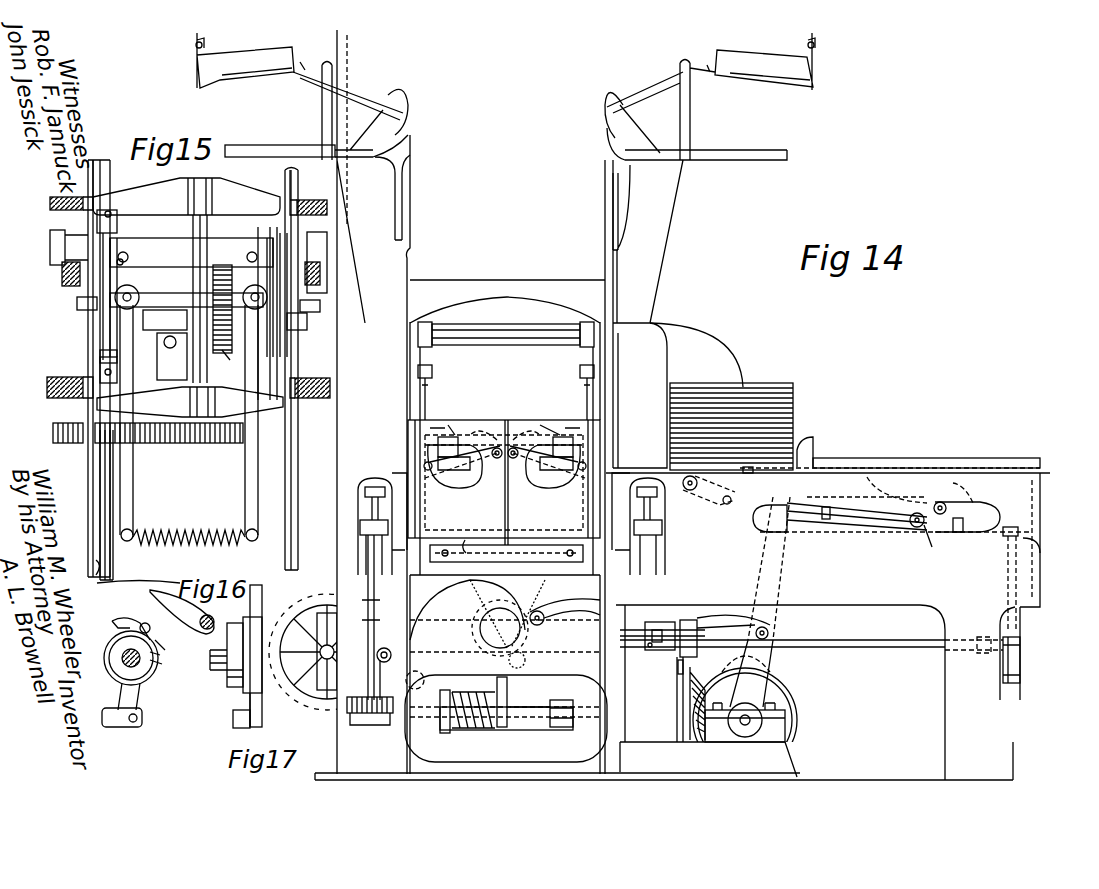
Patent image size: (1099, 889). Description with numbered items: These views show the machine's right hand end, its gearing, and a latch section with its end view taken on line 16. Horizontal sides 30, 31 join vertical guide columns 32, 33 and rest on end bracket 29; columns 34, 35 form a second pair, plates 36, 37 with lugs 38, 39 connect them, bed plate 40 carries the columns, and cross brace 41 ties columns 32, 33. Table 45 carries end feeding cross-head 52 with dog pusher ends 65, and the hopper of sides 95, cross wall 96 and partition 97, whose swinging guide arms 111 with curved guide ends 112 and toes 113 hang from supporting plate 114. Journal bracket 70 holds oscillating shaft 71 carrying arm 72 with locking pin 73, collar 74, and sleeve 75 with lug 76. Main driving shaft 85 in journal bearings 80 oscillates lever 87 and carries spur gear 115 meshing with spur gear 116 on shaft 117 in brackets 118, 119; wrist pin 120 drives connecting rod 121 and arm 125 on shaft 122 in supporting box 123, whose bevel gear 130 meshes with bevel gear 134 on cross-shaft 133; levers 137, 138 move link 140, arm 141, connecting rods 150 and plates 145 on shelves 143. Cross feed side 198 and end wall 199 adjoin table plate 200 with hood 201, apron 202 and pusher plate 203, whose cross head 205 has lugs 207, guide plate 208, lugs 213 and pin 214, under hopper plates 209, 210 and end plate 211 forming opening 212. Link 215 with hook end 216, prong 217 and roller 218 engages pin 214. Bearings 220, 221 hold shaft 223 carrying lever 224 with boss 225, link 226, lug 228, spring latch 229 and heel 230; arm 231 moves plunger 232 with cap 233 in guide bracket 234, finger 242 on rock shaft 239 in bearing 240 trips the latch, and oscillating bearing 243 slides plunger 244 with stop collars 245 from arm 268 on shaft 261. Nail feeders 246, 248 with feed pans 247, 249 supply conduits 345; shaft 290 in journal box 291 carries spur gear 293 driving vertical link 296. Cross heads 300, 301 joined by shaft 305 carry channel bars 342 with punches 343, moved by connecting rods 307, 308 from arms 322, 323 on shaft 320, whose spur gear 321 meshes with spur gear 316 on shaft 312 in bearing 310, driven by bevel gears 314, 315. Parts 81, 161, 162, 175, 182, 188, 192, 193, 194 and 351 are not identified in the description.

In FIG. 14, the vertical link 296 is at (345, 55).
In FIG. 14, the nail feeder 246 is at (370, 95).
In FIG. 14, the oscillating feed pan 247 is at (248, 78).
In FIG. 14, the nail feeder 248 is at (660, 98).
In FIG. 14, the oscillating feed pan 249 is at (755, 82).
In FIG. 14, the nail feeding conduits 345 is at (402, 200).
In FIG. 15, the vertical guide column 32 is at (67, 381).
In FIG. 14, the vertical guide column 32 is at (372, 402).
In FIG. 15, the vertical guide column 33 is at (310, 382).
In FIG. 14, the vertical guide column 33 is at (647, 439).
In FIG. 14, the cross brace 41 is at (507, 293).
In FIG. 14, the side plate 209 is at (712, 315).
In FIG. 14, the cross head 300 is at (436, 371).
In FIG. 14, the shaft 305 is at (495, 345).
In FIG. 14, the cross head 301 is at (585, 347).
In FIG. 14, the side plate 210 is at (640, 314).
In FIG. 14, the end plate 211 is at (618, 392).
In FIG. 14, the opening 212 is at (608, 466).
In FIG. 14, the channel bar 342 is at (432, 373).
In FIG. 14, the punches 343 is at (506, 399).
In FIG. 14, the plate 188 is at (503, 417).
In FIG. 14, the lever 182 is at (459, 419).
In FIG. 14, the toes 113 is at (494, 448).
In FIG. 14, the supporting plate 114 is at (556, 416).
In FIG. 14, the stack 351 is at (773, 410).
In FIG. 14, the apron 202 is at (808, 437).
In FIG. 14, the hood 201 is at (855, 458).
In FIG. 14, the table plate 200 is at (845, 472).
In FIG. 14, the pin 161 is at (434, 460).
In FIG. 14, the pin 162 is at (567, 459).
In FIG. 14, the swinging guide arms 111 is at (504, 469).
In FIG. 14, the curved guide ends 112 is at (445, 470).
In FIG. 14, the plates 145 is at (380, 478).
In FIG. 14, the connecting rods 150 is at (366, 507).
In FIG. 14, the cross wall 96 is at (477, 507).
In FIG. 14, the longitudinal partition 97 is at (508, 512).
In FIG. 14, the sides 95 is at (425, 525).
In FIG. 14, the pusher ends 65 is at (475, 538).
In FIG. 14, the link 140 is at (368, 570).
In FIG. 14, the arm 141 is at (378, 676).
In FIG. 15, the horizontal side 30 is at (85, 466).
In FIG. 14, the horizontal side 30 is at (412, 587).
In FIG. 15, the horizontal side 31 is at (298, 463).
In FIG. 14, the horizontal side 31 is at (614, 587).
In FIG. 14, the table 45 is at (462, 594).
In FIG. 14, the end feeding cross-head 52 is at (525, 594).
In FIG. 15, the spur gear 116 is at (196, 443).
In FIG. 14, the spur gear 116 is at (545, 612).
In FIG. 15, the spur gear 115 is at (53, 437).
In FIG. 14, the spur gear 115 is at (455, 600).
In FIG. 15, the main driving shaft 85 is at (104, 523).
In FIG. 14, the main driving shaft 85 is at (418, 672).
In FIG. 14, the gear 81 is at (499, 628).
In FIG. 14, the lever 87 is at (517, 660).
In FIG. 14, the wrist pin 120 is at (549, 628).
In FIG. 14, the arm 72 is at (540, 685).
In FIG. 14, the locking pin 73 is at (507, 687).
In FIG. 14, the sleeve 75 is at (473, 730).
In FIG. 14, the collar 74 is at (445, 733).
In FIG. 14, the oscillating shaft 71 is at (530, 732).
In FIG. 14, the journal bracket 70 is at (573, 720).
In FIG. 14, the lug 76 is at (495, 755).
In FIG. 14, the end bracket 29 is at (599, 687).
In FIG. 16, the rock shaft 239 is at (189, 638).
In FIG. 14, the rock shaft 239 is at (635, 640).
In FIG. 14, the journal box 291 is at (377, 655).
In FIG. 14, the bearing 240 is at (658, 622).
In FIG. 14, the bearing 220 is at (655, 650).
In FIG. 14, the connecting rod 121 is at (733, 622).
In FIG. 14, the arm 125 is at (768, 588).
In FIG. 14, the bevel gear 134 is at (711, 695).
In FIG. 14, the bevel gear 130 is at (793, 702).
In FIG. 14, the supporting box 123 is at (790, 680).
In FIG. 14, the short longitudinal shaft 122 is at (742, 725).
In FIG. 14, the bed plate 40 is at (790, 758).
In FIG. 14, the frame 16 is at (676, 760).
In FIG. 16, the shaft 223 is at (178, 661).
In FIG. 17, the shaft 223 is at (210, 653).
In FIG. 14, the shaft 223 is at (811, 635).
In FIG. 14, the bearing 221 is at (984, 653).
In FIG. 14, the plunger 232 is at (1018, 628).
In FIG. 14, the arm 231 is at (1020, 663).
In FIG. 14, the cap 233 is at (1022, 537).
In FIG. 14, the guide bracket 234 is at (1040, 553).
In FIG. 14, the end wall 199 is at (1040, 514).
In FIG. 14, the prong 217 is at (995, 500).
In FIG. 14, the lugs 213 is at (960, 496).
In FIG. 14, the hook end 216 is at (967, 517).
In FIG. 14, the cross head 205 is at (938, 500).
In FIG. 14, the link 215 is at (895, 506).
In FIG. 14, the pin 214 is at (932, 545).
In FIG. 14, the roller 218 is at (915, 528).
In FIG. 14, the guide plate 208 is at (857, 540).
In FIG. 14, the lugs 207 is at (785, 537).
In FIG. 14, the stop collars 245 is at (903, 549).
In FIG. 14, the plunger 244 is at (857, 523).
In FIG. 14, the side 198 is at (945, 540).
In FIG. 14, the oscillating bearing 243 is at (965, 540).
In FIG. 14, the shaft 261 is at (698, 485).
In FIG. 14, the pusher plate 203 is at (748, 473).
In FIG. 14, the arm 268 is at (700, 497).
In FIG. 16, the link 226 is at (115, 727).
In FIG. 17, the link 226 is at (233, 728).
In FIG. 14, the link 226 is at (678, 688).
In FIG. 16, the lever 224 is at (140, 706).
In FIG. 17, the lever 224 is at (243, 708).
In FIG. 14, the lever 224 is at (677, 700).
In FIG. 15, the journaled bracket 119 is at (186, 196).
In FIG. 15, the guide column 34 is at (60, 212).
In FIG. 15, the guide column 35 is at (310, 199).
In FIG. 15, the journal bearings 80 is at (117, 296).
In FIG. 15, the short cross-shaft 133 is at (198, 292).
In FIG. 15, the connecting rod 308 is at (302, 260).
In FIG. 15, the lever 137 is at (50, 253).
In FIG. 15, the bolt 175 is at (187, 249).
In FIG. 15, the spur gear 321 is at (227, 295).
In FIG. 15, the lug 38 is at (122, 271).
In FIG. 15, the pivot 193 is at (194, 281).
In FIG. 15, the short longitudinal shaft 117 is at (193, 268).
In FIG. 15, the connecting rod 307 is at (54, 275).
In FIG. 15, the shaft 320 is at (186, 297).
In FIG. 15, the arm 322 is at (77, 306).
In FIG. 15, the lever 138 is at (323, 279).
In FIG. 15, the arm 323 is at (316, 307).
In FIG. 15, the plate 36 is at (103, 329).
In FIG. 15, the journal bearing 310 is at (167, 320).
In FIG. 15, the shaft 312 is at (302, 322).
In FIG. 15, the bevel gear 315 is at (100, 346).
In FIG. 15, the plate 37 is at (297, 313).
In FIG. 15, the bevel gear 314 is at (173, 356).
In FIG. 15, the spur gear 316 is at (229, 361).
In FIG. 15, the lug 39 is at (266, 313).
In FIG. 15, the journaled bracket 118 is at (190, 402).
In FIG. 15, the arm 192 is at (133, 468).
In FIG. 15, the shelves 143 is at (113, 560).
In FIG. 15, the spring 194 is at (189, 526).
In FIG. 16, the spring latch 229 is at (134, 619).
In FIG. 16, the finger 242 is at (182, 612).
In FIG. 16, the lug 228 is at (150, 630).
In FIG. 17, the lug 228 is at (250, 615).
In FIG. 16, the heel 230 is at (132, 652).
In FIG. 17, the heel 230 is at (261, 664).
In FIG. 16, the boss 225 is at (119, 658).
In FIG. 17, the boss 225 is at (227, 680).
In FIG. 17, the spur gear 293 is at (327, 645).
In FIG. 17, the shaft 290 is at (320, 652).